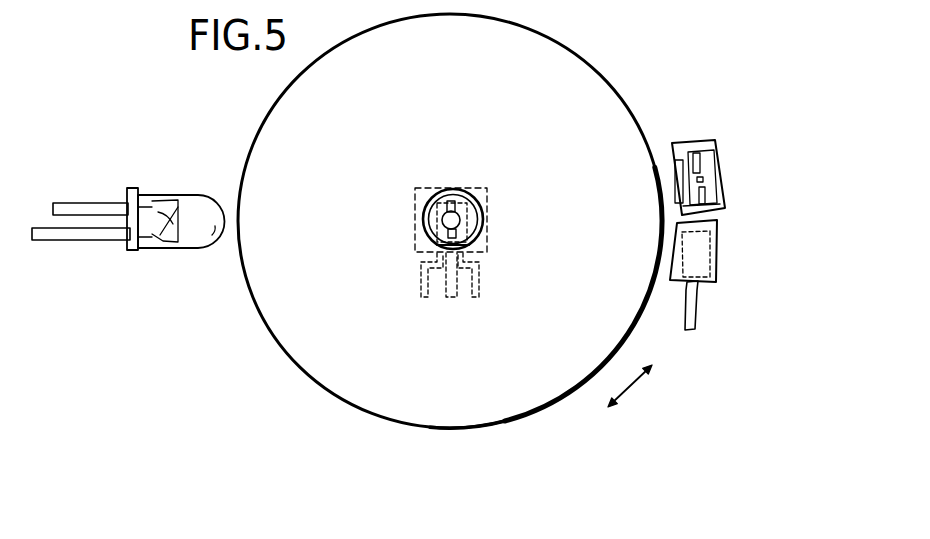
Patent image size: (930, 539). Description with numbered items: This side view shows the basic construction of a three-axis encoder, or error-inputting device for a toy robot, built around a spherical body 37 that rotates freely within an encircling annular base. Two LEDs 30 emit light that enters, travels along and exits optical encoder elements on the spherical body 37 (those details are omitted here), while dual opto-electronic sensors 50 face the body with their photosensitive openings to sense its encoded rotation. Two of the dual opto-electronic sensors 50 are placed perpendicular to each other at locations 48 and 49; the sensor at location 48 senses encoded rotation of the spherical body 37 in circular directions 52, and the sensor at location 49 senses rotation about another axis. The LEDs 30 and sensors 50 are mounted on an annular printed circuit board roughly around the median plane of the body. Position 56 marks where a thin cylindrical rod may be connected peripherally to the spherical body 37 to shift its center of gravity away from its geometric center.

The LED 30 is at (202, 208).
The spherical body 37 is at (610, 82).
The location of dual opto-electronic sensor 48 is at (729, 251).
The location of dual opto-electronic sensor 49 is at (736, 172).
The dual opto-electronic sensor 50 is at (708, 147).
The circular directions 52 is at (643, 392).
The position 56 is at (450, 452).